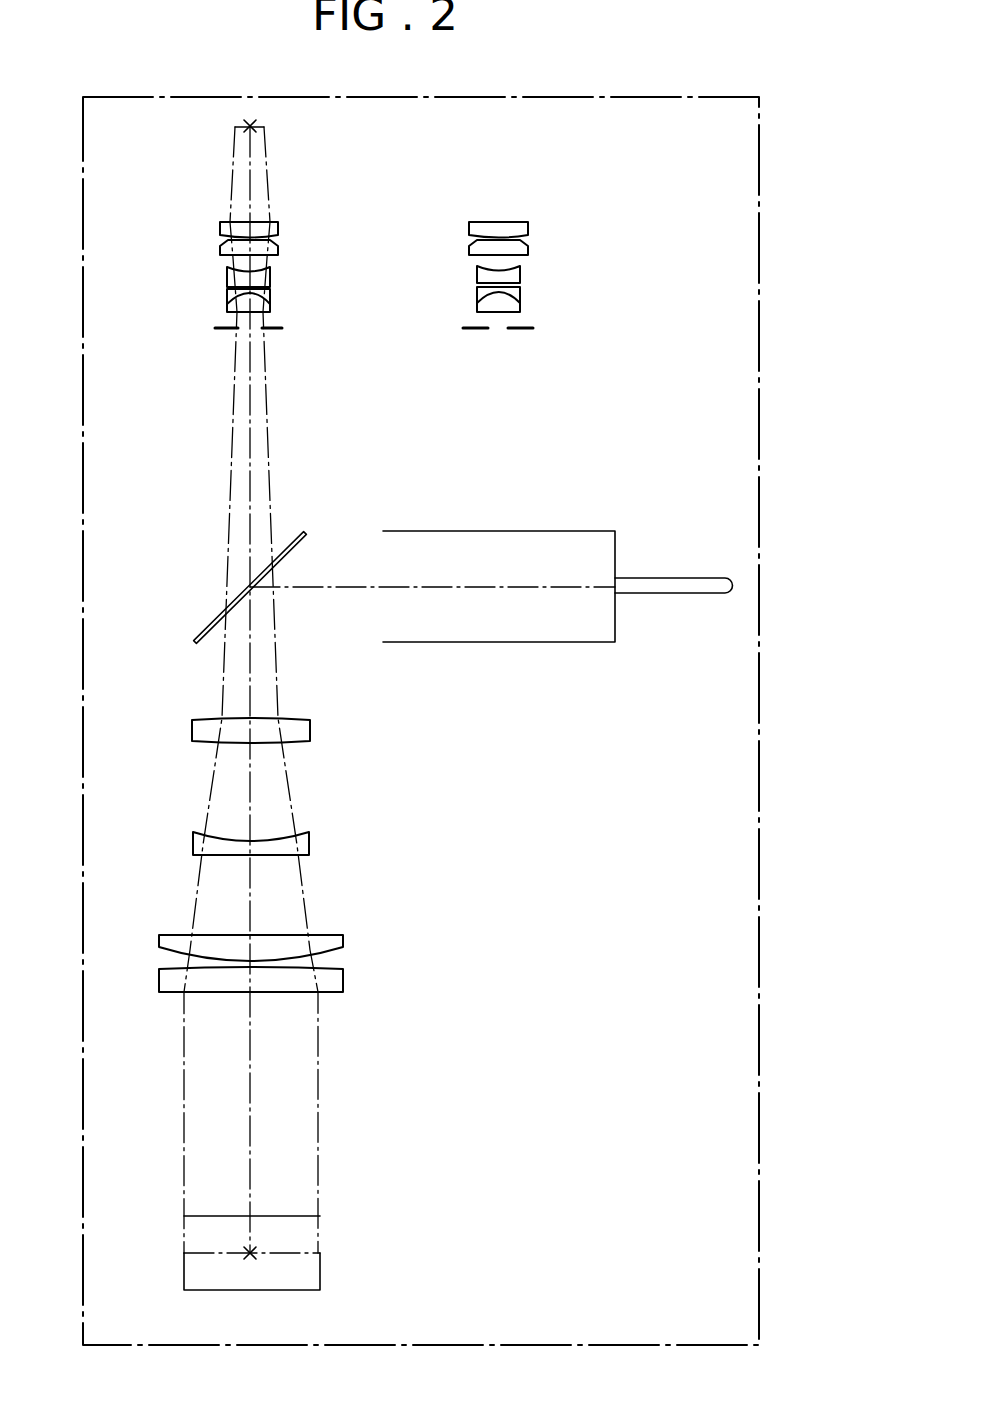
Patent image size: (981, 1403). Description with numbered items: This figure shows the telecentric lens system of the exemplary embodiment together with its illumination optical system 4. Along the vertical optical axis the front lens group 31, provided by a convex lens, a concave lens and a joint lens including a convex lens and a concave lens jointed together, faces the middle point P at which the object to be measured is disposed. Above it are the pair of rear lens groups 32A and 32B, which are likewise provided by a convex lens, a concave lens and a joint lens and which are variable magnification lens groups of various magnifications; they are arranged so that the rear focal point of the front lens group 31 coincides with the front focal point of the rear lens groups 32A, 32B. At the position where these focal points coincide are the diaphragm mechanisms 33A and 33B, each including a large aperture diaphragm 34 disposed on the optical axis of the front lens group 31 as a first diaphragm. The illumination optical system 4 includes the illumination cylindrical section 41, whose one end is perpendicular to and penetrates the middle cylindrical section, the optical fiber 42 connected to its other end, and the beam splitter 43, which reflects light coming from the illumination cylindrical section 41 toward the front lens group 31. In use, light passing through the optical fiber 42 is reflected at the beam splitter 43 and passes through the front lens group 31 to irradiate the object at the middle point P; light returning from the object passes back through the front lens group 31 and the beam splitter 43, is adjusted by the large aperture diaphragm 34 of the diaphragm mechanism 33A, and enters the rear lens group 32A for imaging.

The illumination optical system 4 is at (558, 649).
The front lens group 31 is at (363, 710).
The rear lens group 32A is at (295, 217).
The rear lens group 32B is at (547, 217).
The diaphragm mechanism 33A is at (280, 332).
The diaphragm mechanism 33B is at (525, 332).
The large aperture diaphragm 34 is at (237, 332).
The illumination cylindrical section 41 is at (575, 530).
The optical fiber 42 is at (677, 577).
The beam splitter 43 is at (207, 624).
The middle point P is at (257, 1257).